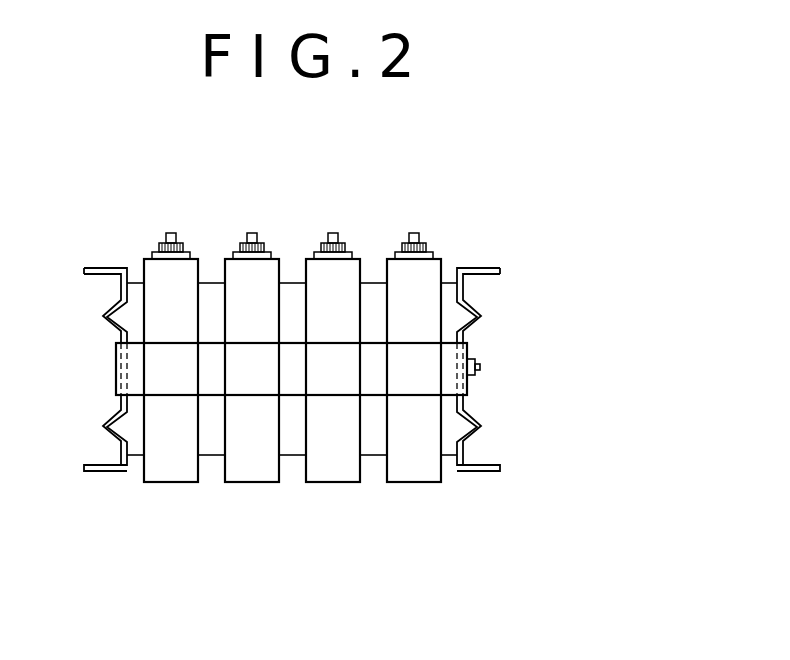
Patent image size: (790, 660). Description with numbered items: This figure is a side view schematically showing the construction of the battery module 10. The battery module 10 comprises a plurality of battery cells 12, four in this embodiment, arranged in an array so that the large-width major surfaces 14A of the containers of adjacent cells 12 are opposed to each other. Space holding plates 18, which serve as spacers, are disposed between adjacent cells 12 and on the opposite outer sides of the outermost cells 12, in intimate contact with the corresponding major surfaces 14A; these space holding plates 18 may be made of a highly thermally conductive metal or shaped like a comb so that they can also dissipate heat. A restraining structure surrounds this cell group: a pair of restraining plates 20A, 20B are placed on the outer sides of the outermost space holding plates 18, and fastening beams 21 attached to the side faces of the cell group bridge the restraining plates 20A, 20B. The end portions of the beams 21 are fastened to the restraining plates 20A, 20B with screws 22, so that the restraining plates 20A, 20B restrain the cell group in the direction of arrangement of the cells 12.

The battery module 10 is at (632, 203).
The battery cell 12 is at (165, 480).
The major surface 14A is at (138, 478).
The space holding plate 18 is at (135, 290).
The restraining plate 20A is at (490, 465).
The restraining plate 20B is at (90, 461).
The fastening beam 21 is at (132, 358).
The screw 22 is at (481, 359).